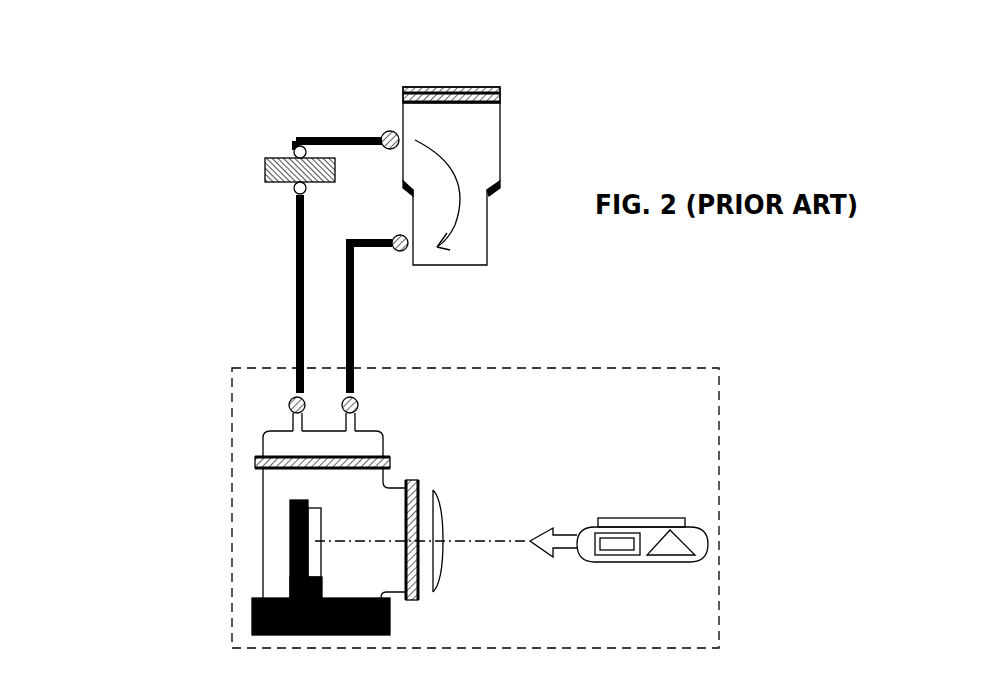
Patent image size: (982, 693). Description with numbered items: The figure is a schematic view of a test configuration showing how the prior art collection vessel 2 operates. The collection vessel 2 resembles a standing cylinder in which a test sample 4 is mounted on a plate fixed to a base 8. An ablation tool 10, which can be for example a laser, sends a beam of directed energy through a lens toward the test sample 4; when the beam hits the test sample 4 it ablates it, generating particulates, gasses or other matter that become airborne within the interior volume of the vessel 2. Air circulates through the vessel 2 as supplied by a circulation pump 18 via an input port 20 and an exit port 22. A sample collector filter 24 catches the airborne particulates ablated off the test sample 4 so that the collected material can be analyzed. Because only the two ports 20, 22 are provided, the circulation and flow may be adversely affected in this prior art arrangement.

The collection vessel 2 is at (180, 480).
The test sample 4 is at (319, 528).
The base 8 is at (252, 622).
The ablation tool 10 is at (706, 537).
The circulation pump 18 is at (444, 127).
The input port 20 is at (357, 335).
The exit port 22 is at (292, 338).
The sample collector filter 24 is at (265, 164).